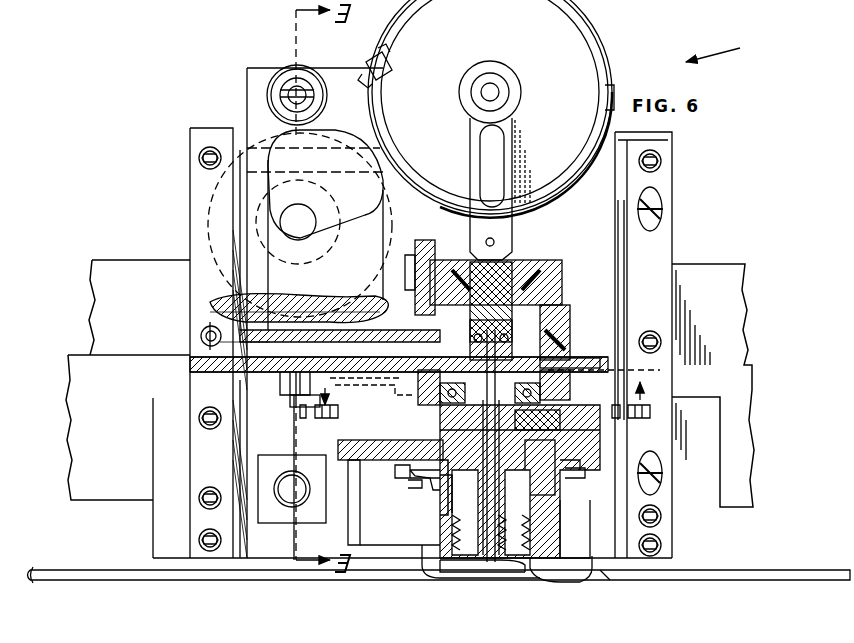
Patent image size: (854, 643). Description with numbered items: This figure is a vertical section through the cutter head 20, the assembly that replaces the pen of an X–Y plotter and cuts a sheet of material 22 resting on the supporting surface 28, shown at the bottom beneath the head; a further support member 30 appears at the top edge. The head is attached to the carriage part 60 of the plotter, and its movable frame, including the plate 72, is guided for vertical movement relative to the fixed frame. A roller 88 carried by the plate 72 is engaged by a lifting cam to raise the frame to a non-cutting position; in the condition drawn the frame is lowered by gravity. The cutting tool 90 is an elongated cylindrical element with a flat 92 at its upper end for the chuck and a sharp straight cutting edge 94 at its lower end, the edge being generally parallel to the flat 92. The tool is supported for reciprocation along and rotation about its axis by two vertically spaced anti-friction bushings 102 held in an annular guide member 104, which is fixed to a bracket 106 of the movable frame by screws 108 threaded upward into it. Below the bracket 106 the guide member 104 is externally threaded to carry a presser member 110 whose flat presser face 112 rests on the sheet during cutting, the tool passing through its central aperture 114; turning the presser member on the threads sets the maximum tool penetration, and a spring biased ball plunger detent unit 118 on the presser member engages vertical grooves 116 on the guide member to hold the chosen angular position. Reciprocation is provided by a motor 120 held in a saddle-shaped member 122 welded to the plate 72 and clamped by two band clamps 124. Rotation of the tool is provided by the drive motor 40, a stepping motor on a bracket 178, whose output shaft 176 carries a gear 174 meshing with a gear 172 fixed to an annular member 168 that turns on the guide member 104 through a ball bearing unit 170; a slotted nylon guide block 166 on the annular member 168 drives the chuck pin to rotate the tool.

The cutter head 20 is at (726, 49).
The sheet of material 22 is at (738, 574).
The surface 28 is at (19, 4).
The support member 30 is at (103, 4).
The drive motor 40 is at (208, 323).
The carriage part 60 is at (700, 450).
The plate 72 is at (603, 162).
The roller 88 is at (308, 55).
The cutting tool 90 is at (498, 430).
The flat 92 is at (520, 330).
The cutting edge 94 is at (598, 580).
The bushings 102 is at (480, 410).
The annular guide member 104 is at (590, 432).
The bracket 106 is at (395, 472).
The screws 108 is at (405, 485).
The presser member 110 is at (545, 548).
The presser face 112 is at (560, 581).
The central aperture 114 is at (440, 566).
The vertical grooves 116 is at (448, 465).
The ball plunger detent unit 118 is at (418, 496).
The motor 120 is at (558, 43).
The saddle-shaped member 122 is at (535, 200).
The band clamps 124 is at (600, 78).
The guide block 166 is at (560, 352).
The annular member 168 is at (560, 386).
The ball bearing unit 170 is at (535, 415).
The gear 172 is at (596, 363).
The gear 174 is at (198, 365).
The output shaft 176 is at (288, 398).
The bracket 178 is at (200, 336).